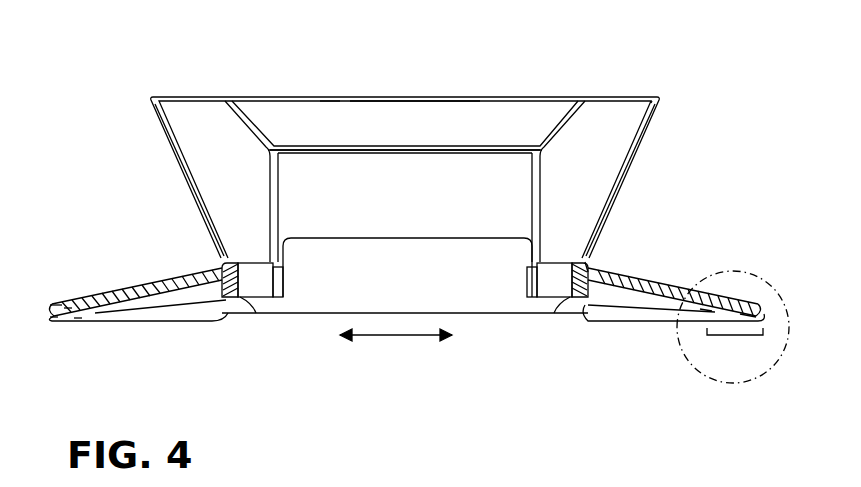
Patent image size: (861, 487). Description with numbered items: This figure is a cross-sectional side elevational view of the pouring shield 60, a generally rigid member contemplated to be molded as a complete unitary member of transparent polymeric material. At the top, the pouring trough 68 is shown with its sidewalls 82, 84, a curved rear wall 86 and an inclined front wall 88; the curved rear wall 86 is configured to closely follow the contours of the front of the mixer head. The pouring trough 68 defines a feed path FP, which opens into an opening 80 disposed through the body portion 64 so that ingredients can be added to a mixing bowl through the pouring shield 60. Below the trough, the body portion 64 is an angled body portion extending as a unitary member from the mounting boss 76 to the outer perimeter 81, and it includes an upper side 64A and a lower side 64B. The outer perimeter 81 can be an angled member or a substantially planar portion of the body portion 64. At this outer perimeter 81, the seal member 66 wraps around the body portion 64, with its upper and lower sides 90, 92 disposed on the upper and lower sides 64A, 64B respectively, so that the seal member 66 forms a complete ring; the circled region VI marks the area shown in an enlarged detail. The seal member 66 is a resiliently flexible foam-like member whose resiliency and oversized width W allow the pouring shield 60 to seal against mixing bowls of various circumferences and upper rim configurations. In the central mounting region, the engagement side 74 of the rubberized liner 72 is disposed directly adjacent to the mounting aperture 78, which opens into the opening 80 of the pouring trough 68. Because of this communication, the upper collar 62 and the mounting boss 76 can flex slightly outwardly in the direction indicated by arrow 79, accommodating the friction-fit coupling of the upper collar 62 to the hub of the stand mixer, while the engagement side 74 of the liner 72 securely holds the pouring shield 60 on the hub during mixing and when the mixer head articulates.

The pouring shield 60 is at (632, 66).
The upper collar 62 is at (210, 252).
The body portion 64 is at (630, 292).
The upper side of body portion 64A is at (148, 292).
The lower side of body portion 64B is at (155, 324).
The seal member 66 is at (55, 306).
The pouring trough 68 is at (668, 124).
The liner 72 is at (586, 261).
The engagement side 74 is at (553, 298).
The mounting boss 76 is at (597, 272).
The mounting aperture 78 is at (441, 298).
The arrow 79 is at (393, 338).
The opening 80 is at (348, 284).
The outer perimeter 81 is at (52, 323).
The sidewall 82 is at (160, 118).
The sidewall 84 is at (637, 158).
The curved rear wall 86 is at (400, 190).
The inclined front wall 88 is at (488, 115).
The upper side of seal member 90 is at (77, 306).
The lower side of seal member 92 is at (80, 323).
The feed path FP is at (330, 135).
The detail view line VI is at (747, 272).
The width of seal member W is at (735, 337).